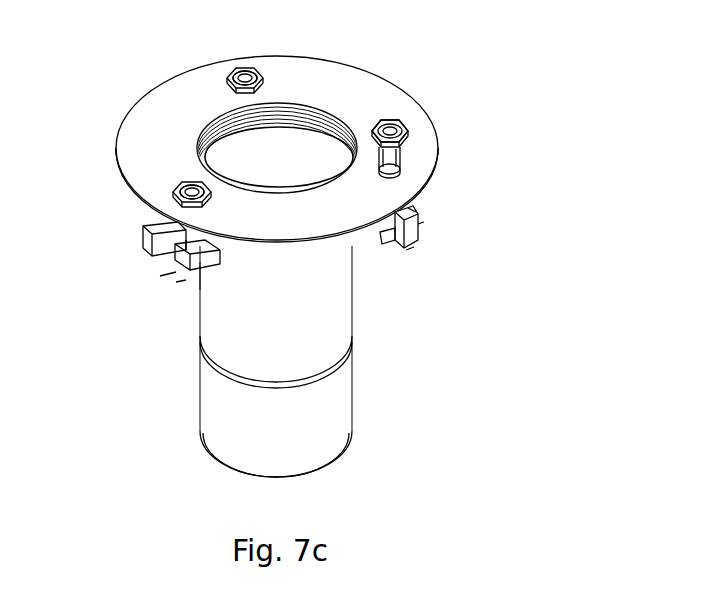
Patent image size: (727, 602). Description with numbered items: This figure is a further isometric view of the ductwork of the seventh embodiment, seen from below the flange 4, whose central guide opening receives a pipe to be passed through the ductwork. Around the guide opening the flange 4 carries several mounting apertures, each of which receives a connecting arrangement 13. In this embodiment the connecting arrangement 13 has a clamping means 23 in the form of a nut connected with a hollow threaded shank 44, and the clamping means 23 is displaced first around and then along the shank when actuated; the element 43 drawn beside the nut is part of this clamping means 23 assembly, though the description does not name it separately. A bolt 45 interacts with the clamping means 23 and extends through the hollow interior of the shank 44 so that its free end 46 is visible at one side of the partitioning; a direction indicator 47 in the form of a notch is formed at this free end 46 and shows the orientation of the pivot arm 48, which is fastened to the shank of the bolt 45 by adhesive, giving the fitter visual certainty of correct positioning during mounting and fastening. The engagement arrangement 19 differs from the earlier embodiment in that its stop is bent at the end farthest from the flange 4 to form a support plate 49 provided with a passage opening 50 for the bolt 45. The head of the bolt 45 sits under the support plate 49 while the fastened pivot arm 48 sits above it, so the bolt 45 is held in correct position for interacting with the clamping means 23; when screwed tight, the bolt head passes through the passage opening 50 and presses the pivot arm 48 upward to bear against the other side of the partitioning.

The flange 4 is at (358, 66).
The connecting arrangement 13 is at (178, 284).
The engagement arrangement 19 is at (158, 277).
The clamping means 23 is at (240, 57).
The bolt 43 is at (408, 137).
The hollow threaded shank 44 is at (397, 152).
The bolt 45 is at (393, 242).
The free end 46 is at (410, 126).
The direction indicator 47 is at (245, 73).
The pivot arm 48 is at (162, 236).
The support plate 49 is at (204, 268).
The passage opening 50 is at (192, 252).